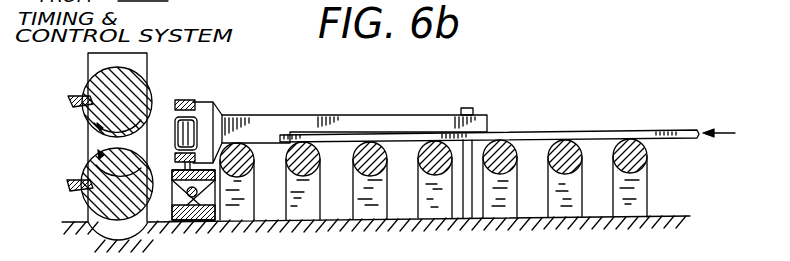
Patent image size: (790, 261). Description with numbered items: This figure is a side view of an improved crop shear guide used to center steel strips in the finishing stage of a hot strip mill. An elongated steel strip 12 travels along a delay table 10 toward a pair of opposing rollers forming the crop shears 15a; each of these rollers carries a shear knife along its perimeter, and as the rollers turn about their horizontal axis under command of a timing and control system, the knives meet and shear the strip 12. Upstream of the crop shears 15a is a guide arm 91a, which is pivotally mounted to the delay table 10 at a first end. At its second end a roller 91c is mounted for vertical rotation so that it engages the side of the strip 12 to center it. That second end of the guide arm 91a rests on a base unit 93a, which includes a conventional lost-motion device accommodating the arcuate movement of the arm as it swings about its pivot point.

The crop shears 15a is at (100, 124).
The roller 91c is at (176, 120).
The guide arm 91a is at (305, 115).
The steel strip 12 is at (543, 132).
The base unit 93a is at (168, 172).
The delay table 10 is at (308, 226).